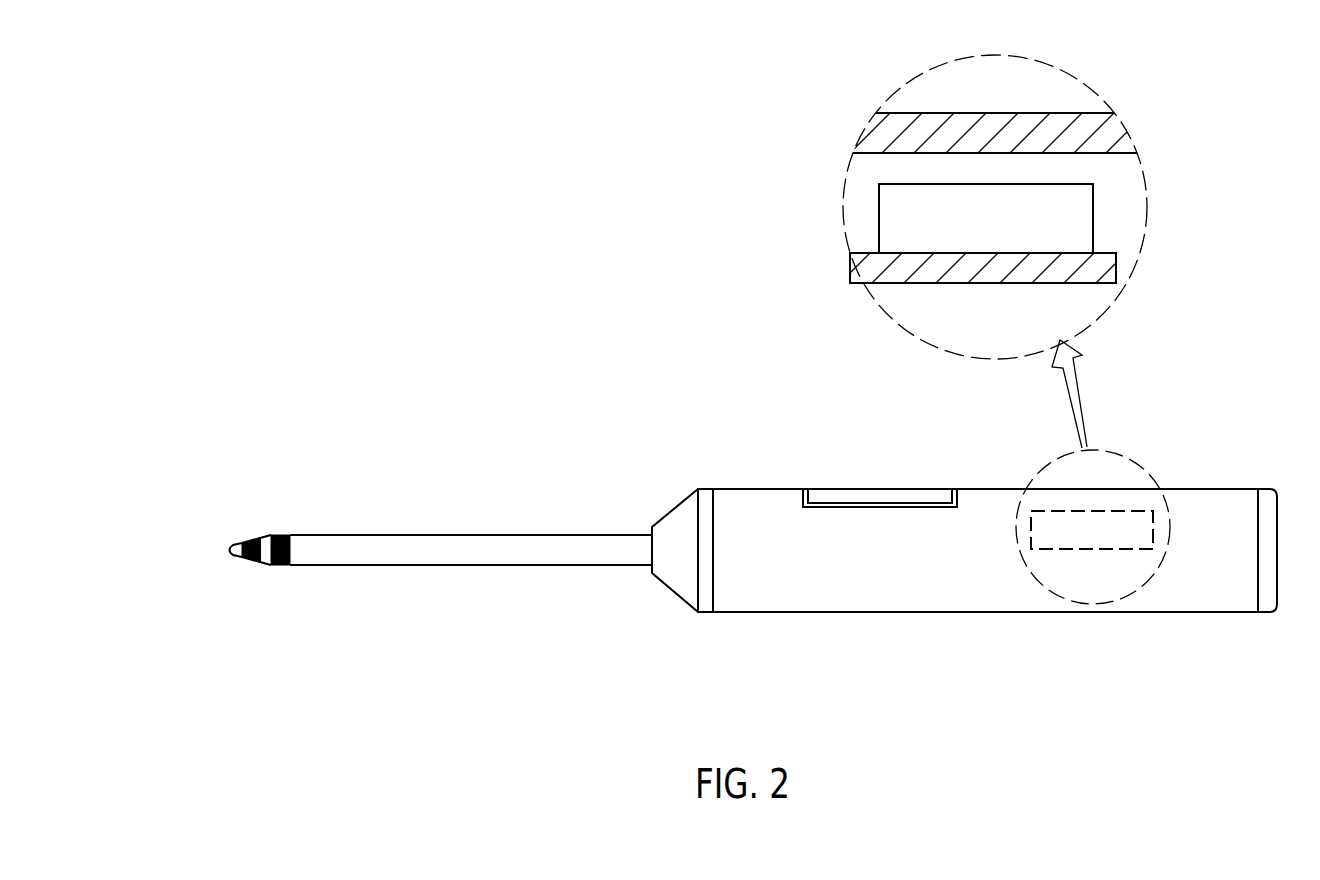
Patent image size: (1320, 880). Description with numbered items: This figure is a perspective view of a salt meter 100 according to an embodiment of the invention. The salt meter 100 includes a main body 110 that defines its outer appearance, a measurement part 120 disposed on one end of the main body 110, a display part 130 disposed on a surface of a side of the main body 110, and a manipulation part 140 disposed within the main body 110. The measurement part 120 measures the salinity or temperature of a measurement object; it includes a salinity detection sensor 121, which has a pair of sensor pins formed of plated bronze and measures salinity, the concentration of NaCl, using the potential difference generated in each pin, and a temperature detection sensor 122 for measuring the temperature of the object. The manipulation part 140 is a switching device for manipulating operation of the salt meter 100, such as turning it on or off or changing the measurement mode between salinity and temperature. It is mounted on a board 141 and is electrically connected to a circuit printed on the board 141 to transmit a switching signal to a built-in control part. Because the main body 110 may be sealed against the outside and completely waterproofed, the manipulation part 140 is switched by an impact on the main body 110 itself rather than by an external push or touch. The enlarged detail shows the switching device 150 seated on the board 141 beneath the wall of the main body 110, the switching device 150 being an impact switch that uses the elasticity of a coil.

The salt meter 100 is at (526, 344).
The main body 110 is at (817, 648).
The measurement part 120 is at (256, 598).
The salinity detection sensor 121 is at (247, 538).
The temperature detection sensor 122 is at (288, 535).
The display part 130 is at (828, 458).
The manipulation part 140 is at (1148, 494).
The board 141 is at (1100, 267).
The switching device 150 is at (1077, 208).